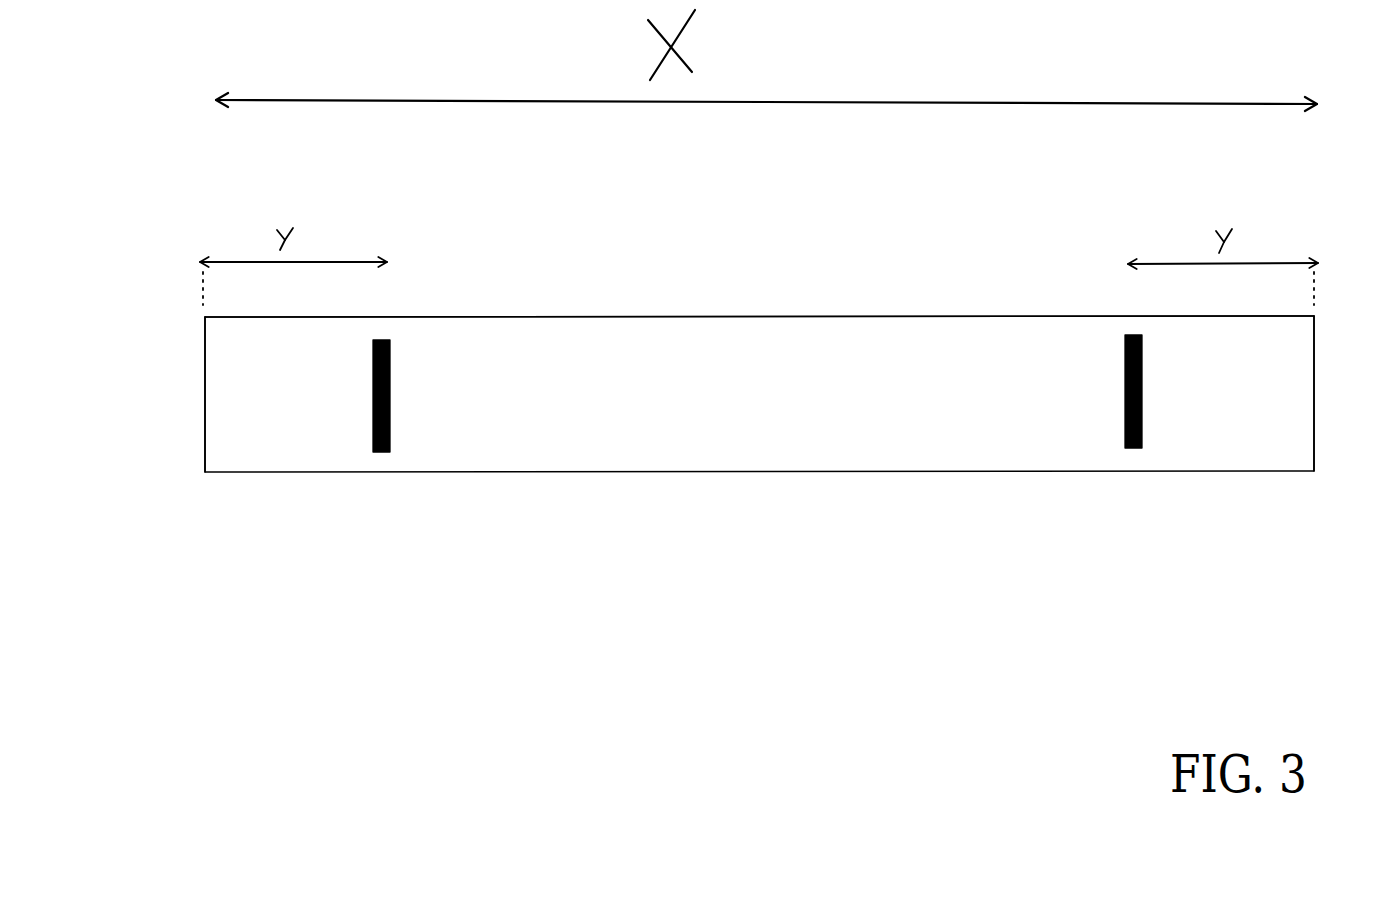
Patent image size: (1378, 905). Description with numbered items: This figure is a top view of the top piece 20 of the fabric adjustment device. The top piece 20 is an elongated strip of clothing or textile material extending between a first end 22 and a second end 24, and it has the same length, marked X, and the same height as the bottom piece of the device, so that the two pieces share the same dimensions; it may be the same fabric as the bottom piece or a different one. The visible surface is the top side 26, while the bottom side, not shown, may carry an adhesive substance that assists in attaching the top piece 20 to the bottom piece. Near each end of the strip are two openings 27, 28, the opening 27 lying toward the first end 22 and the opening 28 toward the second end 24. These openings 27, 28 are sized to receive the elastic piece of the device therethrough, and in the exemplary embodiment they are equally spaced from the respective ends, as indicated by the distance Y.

The top piece 20 is at (838, 312).
The first end 22 is at (183, 455).
The second end 24 is at (1330, 440).
The top side 26 is at (620, 360).
The opening 27 is at (390, 400).
The opening 28 is at (1122, 388).